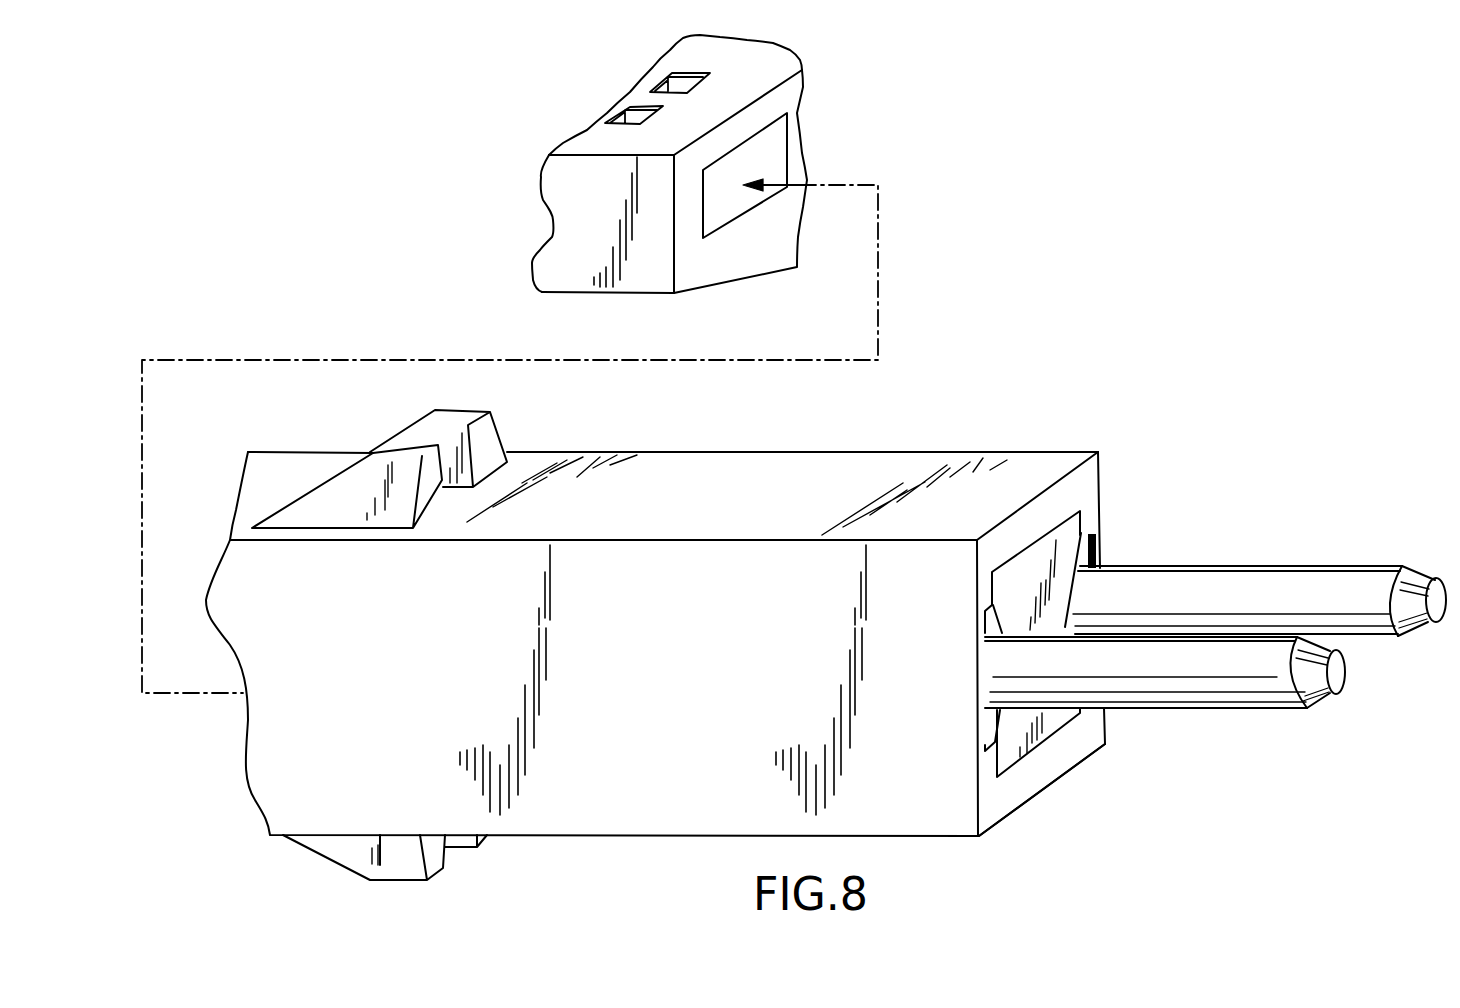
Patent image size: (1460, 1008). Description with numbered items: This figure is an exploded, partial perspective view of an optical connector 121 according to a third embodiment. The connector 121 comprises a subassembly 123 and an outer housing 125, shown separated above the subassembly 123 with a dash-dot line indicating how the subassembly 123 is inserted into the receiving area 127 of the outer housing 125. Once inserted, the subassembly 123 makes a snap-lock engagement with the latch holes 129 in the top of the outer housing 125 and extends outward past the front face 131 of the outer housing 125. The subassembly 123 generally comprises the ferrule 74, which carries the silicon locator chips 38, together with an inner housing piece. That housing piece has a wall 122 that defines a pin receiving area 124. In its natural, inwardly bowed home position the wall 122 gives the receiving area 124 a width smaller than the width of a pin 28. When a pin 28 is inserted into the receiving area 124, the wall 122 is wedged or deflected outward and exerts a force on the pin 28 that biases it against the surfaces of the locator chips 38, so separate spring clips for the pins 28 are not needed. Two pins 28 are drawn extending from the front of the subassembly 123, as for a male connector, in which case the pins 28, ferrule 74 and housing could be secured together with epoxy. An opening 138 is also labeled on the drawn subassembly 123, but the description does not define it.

The optical connector 121 is at (1020, 177).
The outer housing 125 is at (773, 63).
The latch holes 129 is at (623, 117).
The front face 131 is at (792, 93).
The receiving area 127 is at (772, 148).
The silicon locator chips 38 is at (1037, 563).
The ferrule 74 is at (1065, 533).
The pin receiving area 124 is at (983, 623).
The wall 122 is at (978, 723).
The lower cavity opening 138 is at (1043, 737).
The pin 28 is at (1381, 626).
The subassembly 123 is at (535, 812).